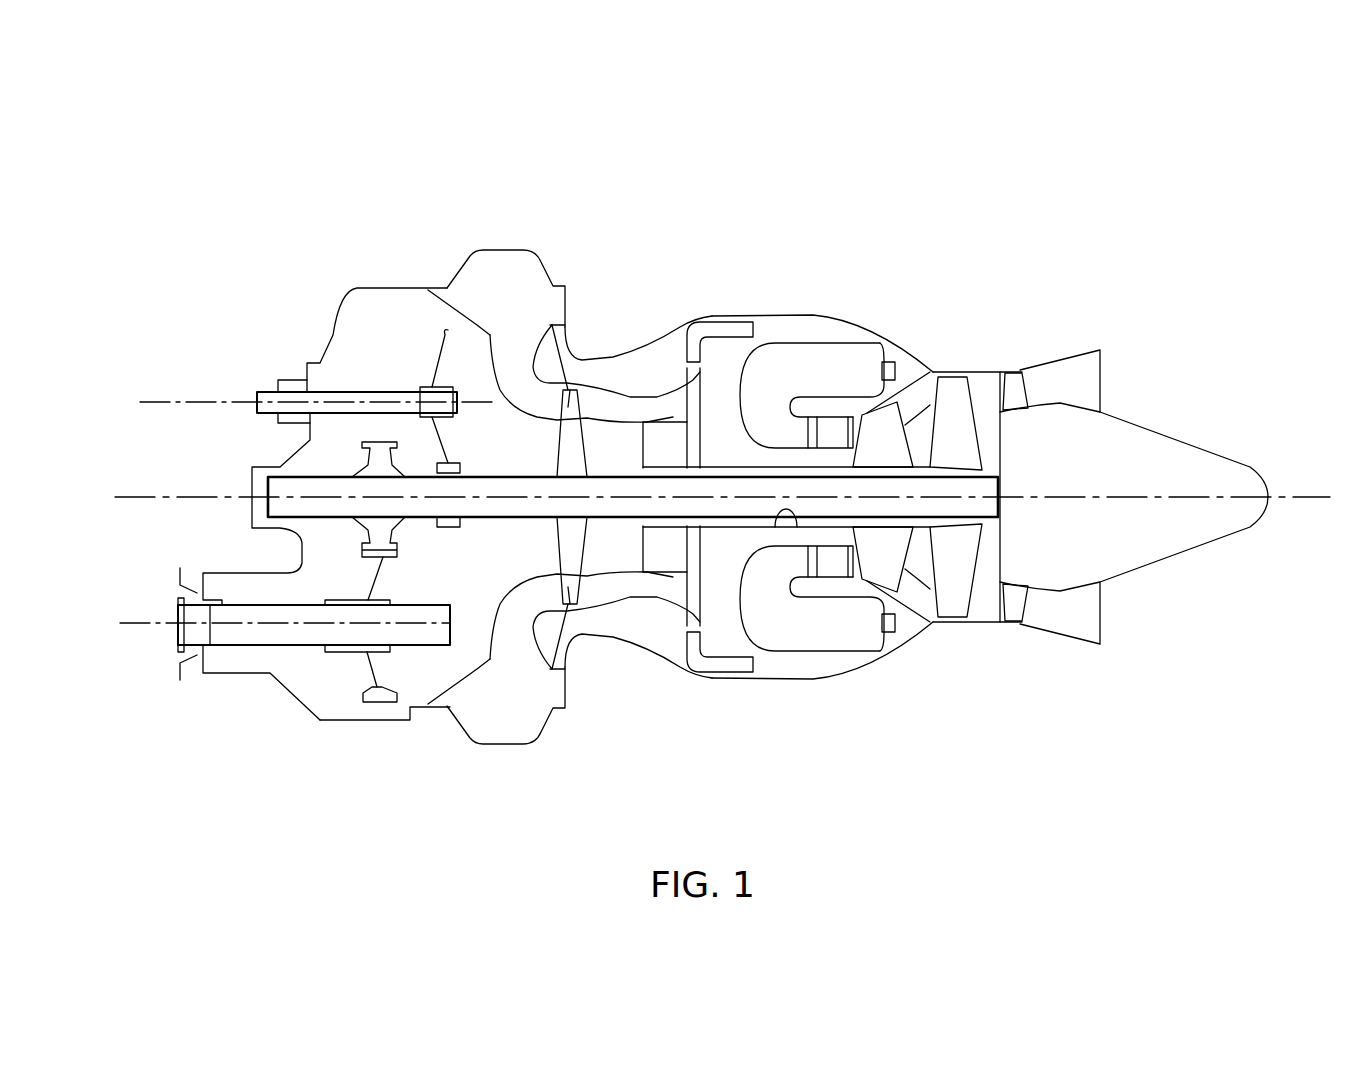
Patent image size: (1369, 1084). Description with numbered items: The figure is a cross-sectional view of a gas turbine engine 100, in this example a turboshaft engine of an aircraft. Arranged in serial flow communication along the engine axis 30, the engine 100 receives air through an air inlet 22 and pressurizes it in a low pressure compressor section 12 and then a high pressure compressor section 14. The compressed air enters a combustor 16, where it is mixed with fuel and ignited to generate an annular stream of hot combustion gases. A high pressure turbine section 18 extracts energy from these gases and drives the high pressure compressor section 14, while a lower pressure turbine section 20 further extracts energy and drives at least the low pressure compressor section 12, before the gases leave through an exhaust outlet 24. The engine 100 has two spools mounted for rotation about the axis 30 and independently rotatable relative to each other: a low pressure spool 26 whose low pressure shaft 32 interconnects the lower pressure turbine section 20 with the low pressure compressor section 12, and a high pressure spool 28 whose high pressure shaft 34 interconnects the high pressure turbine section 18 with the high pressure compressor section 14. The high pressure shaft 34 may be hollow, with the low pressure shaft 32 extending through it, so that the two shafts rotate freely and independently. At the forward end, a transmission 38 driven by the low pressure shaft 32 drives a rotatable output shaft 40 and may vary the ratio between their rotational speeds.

The gas turbine engine 100 is at (1075, 257).
The low pressure compressor section 12 is at (550, 324).
The high pressure compressor section 14 is at (673, 435).
The combustor 16 is at (827, 377).
The high pressure turbine section 18 is at (880, 553).
The lower pressure turbine section 20 is at (953, 393).
The air inlet 22 is at (468, 722).
The exhaust outlet 24 is at (1083, 622).
The low pressure spool 26 is at (600, 520).
The high pressure spool 28 is at (717, 527).
The engine axis 30 is at (1332, 488).
The low pressure shaft 32 is at (500, 512).
The high pressure shaft 34 is at (797, 530).
The transmission 38 is at (330, 545).
The output shaft 40 is at (245, 632).